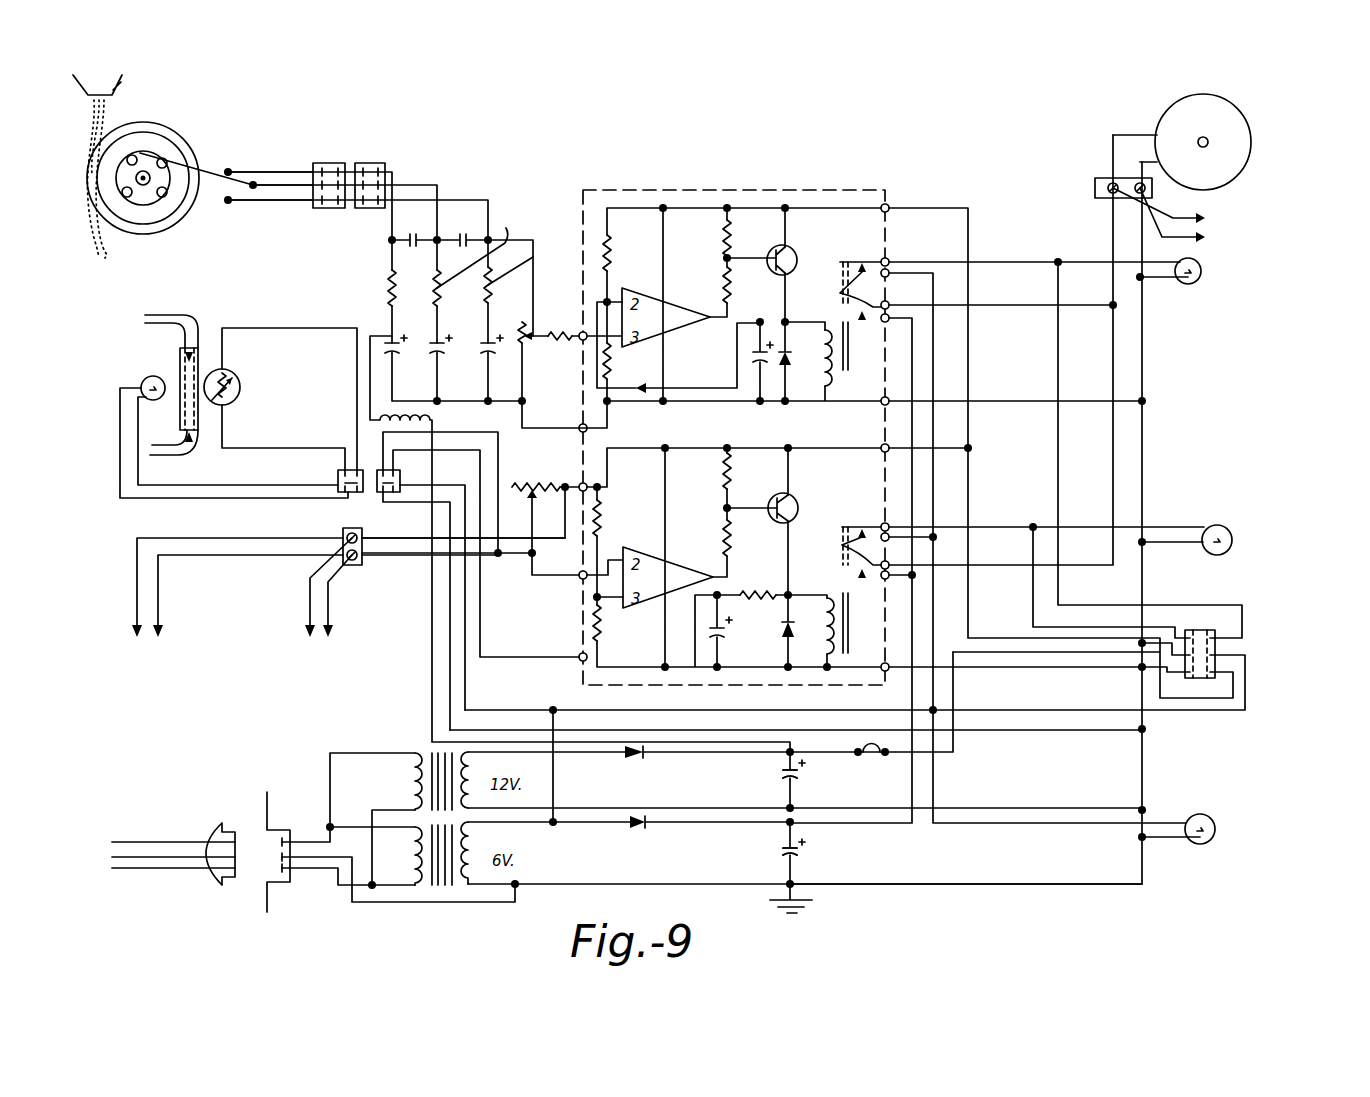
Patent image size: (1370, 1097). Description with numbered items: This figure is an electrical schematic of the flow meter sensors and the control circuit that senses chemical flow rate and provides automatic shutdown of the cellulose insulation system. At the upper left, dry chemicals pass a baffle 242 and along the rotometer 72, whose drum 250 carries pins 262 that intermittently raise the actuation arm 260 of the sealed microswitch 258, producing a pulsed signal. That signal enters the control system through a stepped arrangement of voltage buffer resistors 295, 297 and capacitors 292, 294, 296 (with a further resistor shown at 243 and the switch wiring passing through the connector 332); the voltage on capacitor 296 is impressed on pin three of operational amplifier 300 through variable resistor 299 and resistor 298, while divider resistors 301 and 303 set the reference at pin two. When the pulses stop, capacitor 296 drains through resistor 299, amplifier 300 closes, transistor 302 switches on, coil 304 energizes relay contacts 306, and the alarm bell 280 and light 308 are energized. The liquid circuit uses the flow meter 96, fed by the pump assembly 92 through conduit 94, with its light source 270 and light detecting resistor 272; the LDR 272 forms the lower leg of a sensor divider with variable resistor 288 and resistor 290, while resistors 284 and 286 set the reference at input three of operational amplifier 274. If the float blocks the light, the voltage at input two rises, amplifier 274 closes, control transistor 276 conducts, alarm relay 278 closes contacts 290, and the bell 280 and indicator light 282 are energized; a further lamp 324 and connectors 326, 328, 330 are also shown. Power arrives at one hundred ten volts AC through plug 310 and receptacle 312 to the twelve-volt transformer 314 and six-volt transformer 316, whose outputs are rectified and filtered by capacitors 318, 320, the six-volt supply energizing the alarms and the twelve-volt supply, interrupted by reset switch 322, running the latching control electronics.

The rotometer 72 is at (93, 215).
The motor driven pump assembly 92 is at (162, 315).
The conduit 94 is at (177, 450).
The flow meter 96 is at (194, 347).
The baffle 242 is at (122, 88).
The resistors 243 is at (388, 283).
The drum 250 is at (112, 168).
The microswitch 258 is at (278, 172).
The actuation arm 260 is at (210, 168).
The pins 262 is at (137, 152).
The light source 270 is at (153, 376).
The light detecting resistor 272 is at (240, 388).
The operational amplifier 274 is at (661, 553).
The control transistor 276 is at (795, 502).
The alarm relay 278 is at (838, 575).
The alarm bell 280 is at (1237, 133).
The indicator light 282 is at (1232, 532).
The resistor 284 is at (598, 500).
The resistor 286 is at (600, 626).
The variable resistor 288 is at (520, 485).
The relay contacts 290 is at (745, 595).
The capacitor 292 is at (388, 340).
The capacitor 294 is at (435, 340).
The voltage buffer resistor 295 is at (492, 248).
The capacitor 296 is at (486, 340).
The voltage buffer resistor 297 is at (540, 250).
The resistor 298 is at (522, 343).
The variable resistor 299 is at (525, 345).
The operational amplifier 300 is at (670, 307).
The voltage divider resistor 301 is at (609, 365).
The transistor 302 is at (792, 248).
The voltage divider resistor 303 is at (609, 250).
The relay coil 304 is at (853, 367).
The relay contacts 306 is at (840, 290).
The light 308 is at (1202, 272).
The plug 310 is at (225, 885).
The receptacle 312 is at (290, 882).
The 12-volt transformer 314 is at (410, 790).
The 6-volt transformer 316 is at (422, 863).
The filter capacitor 318 is at (797, 775).
The filter capacitor 320 is at (798, 851).
The reset switch 322 is at (870, 757).
The indicator lamp 324 is at (1213, 826).
The terminal block 326 is at (362, 566).
The connectors 328 is at (382, 494).
The connector 330 is at (1215, 646).
The connector 332 is at (372, 165).